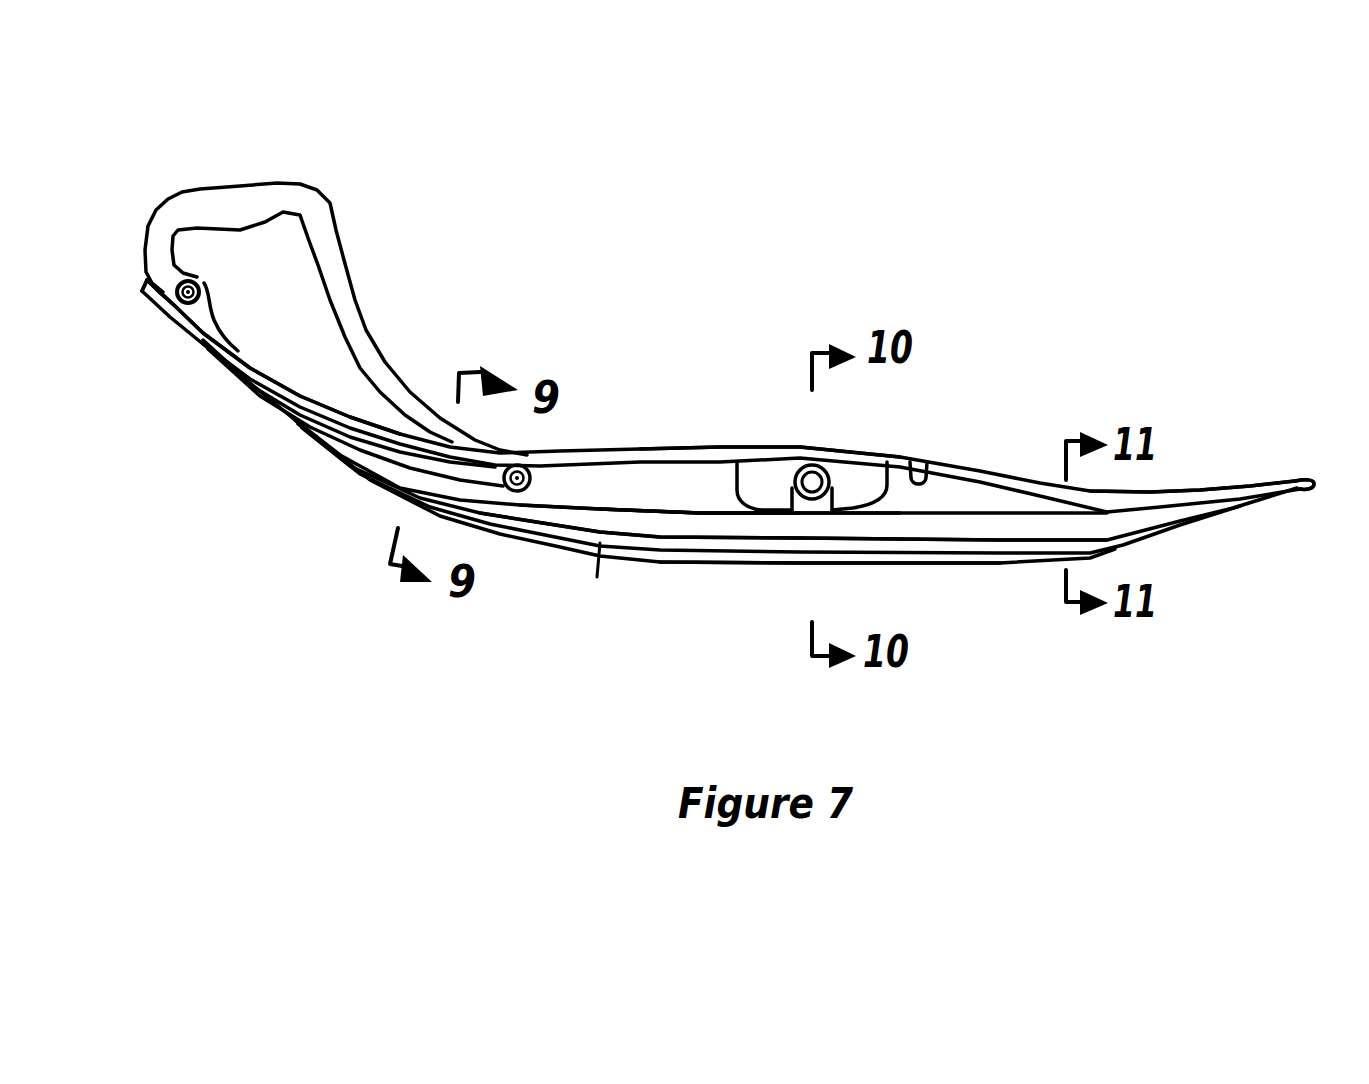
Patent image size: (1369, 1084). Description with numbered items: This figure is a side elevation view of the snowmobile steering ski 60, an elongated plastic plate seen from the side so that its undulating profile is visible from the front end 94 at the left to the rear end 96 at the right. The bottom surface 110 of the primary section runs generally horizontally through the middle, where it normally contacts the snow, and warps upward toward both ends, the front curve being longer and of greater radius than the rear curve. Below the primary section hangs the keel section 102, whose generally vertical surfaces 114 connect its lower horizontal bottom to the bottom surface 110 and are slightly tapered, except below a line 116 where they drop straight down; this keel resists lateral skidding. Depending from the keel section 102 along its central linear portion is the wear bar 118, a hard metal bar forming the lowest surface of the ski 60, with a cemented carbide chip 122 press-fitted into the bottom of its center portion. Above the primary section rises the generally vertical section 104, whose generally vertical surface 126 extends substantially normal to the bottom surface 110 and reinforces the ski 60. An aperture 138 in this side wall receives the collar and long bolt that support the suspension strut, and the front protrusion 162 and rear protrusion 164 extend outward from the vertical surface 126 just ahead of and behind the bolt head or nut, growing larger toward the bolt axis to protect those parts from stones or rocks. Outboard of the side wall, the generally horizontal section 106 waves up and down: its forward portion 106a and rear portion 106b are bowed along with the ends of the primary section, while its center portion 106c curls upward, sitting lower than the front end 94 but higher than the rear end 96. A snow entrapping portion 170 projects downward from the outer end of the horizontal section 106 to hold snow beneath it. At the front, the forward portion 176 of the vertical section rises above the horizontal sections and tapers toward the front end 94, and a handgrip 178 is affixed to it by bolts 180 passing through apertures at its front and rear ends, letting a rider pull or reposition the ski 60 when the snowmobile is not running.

The ski 60 is at (975, 256).
The front end 94 is at (147, 282).
The rear end 96 is at (1314, 481).
The keel section 102 is at (993, 516).
The generally vertical section 104 is at (637, 478).
The generally horizontal section 106 is at (990, 458).
The forward portion 106a is at (272, 390).
The rear portion 106b is at (1207, 493).
The center portion 106c is at (798, 452).
The bottom surface 110 is at (715, 514).
The generally vertical surface 114 is at (630, 523).
The line 116 is at (955, 541).
The wear bar 118 is at (675, 553).
The cemented carbide chip 122 is at (825, 567).
The generally vertical surface 126 is at (683, 480).
The aperture 138 is at (818, 462).
The front protrusion 162 is at (767, 478).
The rear protrusion 164 is at (870, 478).
The snow entrapping portion 170 is at (938, 463).
The forward portion 176 is at (212, 310).
The handgrip 178 is at (340, 239).
The bolt 180 is at (183, 306).